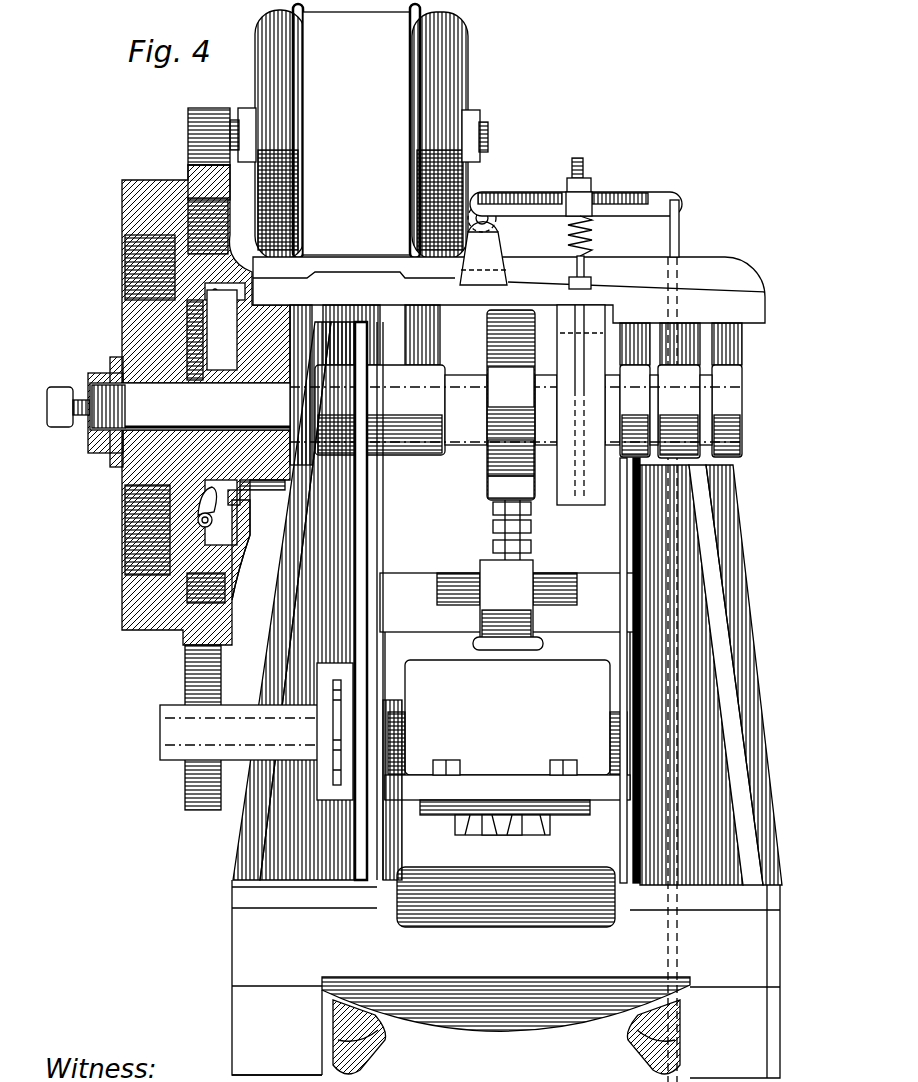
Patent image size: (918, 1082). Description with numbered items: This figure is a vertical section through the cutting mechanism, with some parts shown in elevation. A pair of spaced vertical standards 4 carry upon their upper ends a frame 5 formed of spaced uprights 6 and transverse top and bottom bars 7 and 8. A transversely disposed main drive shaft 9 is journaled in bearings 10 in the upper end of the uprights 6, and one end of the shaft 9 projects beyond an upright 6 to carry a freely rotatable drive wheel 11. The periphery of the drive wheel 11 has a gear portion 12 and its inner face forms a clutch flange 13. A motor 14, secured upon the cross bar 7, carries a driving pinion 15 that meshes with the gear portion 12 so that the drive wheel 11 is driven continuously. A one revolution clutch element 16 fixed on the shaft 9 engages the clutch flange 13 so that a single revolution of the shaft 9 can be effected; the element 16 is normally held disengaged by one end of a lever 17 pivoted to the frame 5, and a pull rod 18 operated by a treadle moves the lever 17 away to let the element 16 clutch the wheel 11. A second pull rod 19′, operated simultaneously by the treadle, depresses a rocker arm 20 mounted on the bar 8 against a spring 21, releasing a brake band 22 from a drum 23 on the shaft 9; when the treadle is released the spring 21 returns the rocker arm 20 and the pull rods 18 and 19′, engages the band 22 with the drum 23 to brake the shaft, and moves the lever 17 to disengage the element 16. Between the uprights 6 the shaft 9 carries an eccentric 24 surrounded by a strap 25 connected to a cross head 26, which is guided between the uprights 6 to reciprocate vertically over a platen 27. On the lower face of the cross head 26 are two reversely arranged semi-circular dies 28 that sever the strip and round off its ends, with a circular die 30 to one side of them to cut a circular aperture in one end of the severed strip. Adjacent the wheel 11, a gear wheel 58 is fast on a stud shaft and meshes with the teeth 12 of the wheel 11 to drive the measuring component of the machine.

The vertical standards 4 is at (238, 1032).
The frame 5 is at (702, 568).
The uprights 6 is at (237, 862).
The top bar 7 is at (707, 294).
The bottom bar 8 is at (506, 979).
The main drive shaft 9 is at (394, 412).
The bearings 10 is at (748, 412).
The drive wheel 11 is at (133, 217).
The gear portion 12 is at (187, 172).
The clutch flange 13 is at (237, 547).
The motor 14 is at (345, 95).
The driving pinion 15 is at (211, 108).
The one revolution clutch element 16 is at (274, 328).
The lever 17 is at (232, 537).
The pull rod 18 is at (198, 516).
The second pull rod 19′ is at (680, 232).
The rocker arm 20 is at (637, 193).
The spring 21 is at (594, 240).
The brake band 22 is at (588, 505).
The drum 23 is at (563, 508).
The eccentric 24 is at (487, 334).
The strap 25 is at (485, 465).
The cross head 26 is at (503, 660).
The platen 27 is at (418, 880).
The semi-circular dies 28 is at (545, 824).
The circular die 30 is at (492, 825).
The gear wheel 58 is at (187, 800).